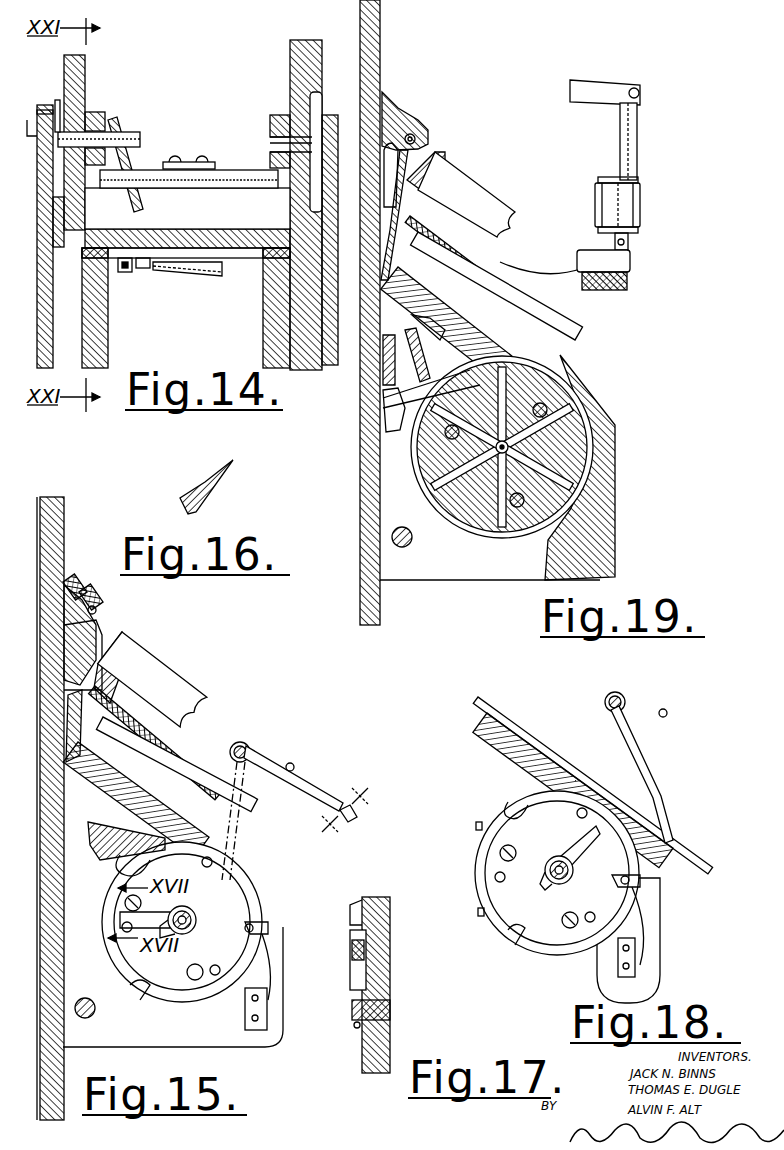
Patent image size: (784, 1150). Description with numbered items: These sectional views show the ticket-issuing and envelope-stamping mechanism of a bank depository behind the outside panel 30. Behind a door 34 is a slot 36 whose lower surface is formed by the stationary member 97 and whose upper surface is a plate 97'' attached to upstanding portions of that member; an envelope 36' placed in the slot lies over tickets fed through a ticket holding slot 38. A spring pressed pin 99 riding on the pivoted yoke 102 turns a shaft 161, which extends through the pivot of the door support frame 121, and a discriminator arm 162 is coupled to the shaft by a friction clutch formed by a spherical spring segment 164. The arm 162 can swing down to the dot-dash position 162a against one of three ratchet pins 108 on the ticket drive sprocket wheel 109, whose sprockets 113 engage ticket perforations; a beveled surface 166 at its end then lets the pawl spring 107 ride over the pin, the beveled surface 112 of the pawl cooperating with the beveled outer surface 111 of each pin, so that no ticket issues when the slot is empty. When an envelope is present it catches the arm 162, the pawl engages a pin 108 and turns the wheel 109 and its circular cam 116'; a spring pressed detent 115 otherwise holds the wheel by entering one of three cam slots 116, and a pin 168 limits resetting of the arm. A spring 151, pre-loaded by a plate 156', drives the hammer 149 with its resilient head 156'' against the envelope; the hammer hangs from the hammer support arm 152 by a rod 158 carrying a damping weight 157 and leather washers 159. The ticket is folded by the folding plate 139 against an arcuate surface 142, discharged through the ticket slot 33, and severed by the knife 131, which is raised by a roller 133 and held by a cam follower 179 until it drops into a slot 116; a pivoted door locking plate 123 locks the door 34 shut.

In FIG. 19, the outside panel 30 is at (360, 555).
In FIG. 15, the outside panel 30 is at (48, 498).
In FIG. 19, the ticket slot 33 is at (383, 402).
In FIG. 19, the door 34 is at (398, 250).
In FIG. 15, the door 34 is at (80, 725).
In FIG. 14, the slot 36 is at (186, 272).
In FIG. 19, the slot 36 is at (506, 278).
In FIG. 15, the slot 36 is at (176, 763).
In FIG. 18, the envelope 36' is at (612, 785).
In FIG. 19, the ticket holding slot 38 is at (520, 370).
In FIG. 15, the ticket holding slot 38 is at (245, 852).
In FIG. 18, the ticket holding slot 38 is at (635, 800).
In FIG. 14, the stationary member 97 is at (187, 205).
In FIG. 19, the stationary member 97 is at (447, 322).
In FIG. 15, the stationary member 97 is at (136, 799).
In FIG. 14, the plate 97'' is at (264, 205).
In FIG. 15, the plate 97'' is at (150, 680).
In FIG. 14, the spring pressed pin 99 is at (48, 112).
In FIG. 14, the pivoted yoke 102 is at (58, 100).
In FIG. 15, the pawl spring 107 is at (118, 920).
In FIG. 17, the pawl spring 107 is at (350, 975).
In FIG. 18, the pawl spring 107 is at (575, 840).
In FIG. 15, the ratchet pins 108 is at (213, 976).
In FIG. 17, the ratchet pins 108 is at (362, 1030).
In FIG. 18, the ratchet pins 108 is at (585, 808).
In FIG. 19, the ticket drive sprocket wheel 109 is at (478, 522).
In FIG. 15, the ticket drive sprocket wheel 109 is at (160, 990).
In FIG. 18, the ticket drive sprocket wheel 109 is at (478, 838).
In FIG. 17, the beveled outer surface 111 is at (352, 1018).
In FIG. 17, the beveled surface 112 is at (352, 935).
In FIG. 19, the sprockets 113 is at (430, 495).
In FIG. 18, the sprockets 113 is at (478, 824).
In FIG. 15, the spring pressed detent 115 is at (270, 928).
In FIG. 18, the spring pressed detent 115 is at (642, 900).
In FIG. 15, the cam slots 116 is at (155, 755).
In FIG. 18, the cam slots 116 is at (557, 857).
In FIG. 15, the circular cam 116' is at (182, 951).
In FIG. 18, the circular cam 116' is at (482, 936).
In FIG. 14, the door support frame 121 is at (88, 112).
In FIG. 15, the door locking plate 123 is at (108, 640).
In FIG. 14, the ticket severing knife 131 is at (213, 276).
In FIG. 15, the ticket severing knife 131 is at (100, 870).
In FIG. 14, the roller 133 is at (125, 272).
In FIG. 19, the ticket folding plate 139 is at (428, 498).
In FIG. 19, the arcuate surface 142 is at (382, 380).
In FIG. 19, the hammer 149 is at (630, 260).
In FIG. 19, the spring 151 is at (532, 262).
In FIG. 19, the hammer support arm 152 is at (600, 85).
In FIG. 14, the plate 156' is at (189, 159).
In FIG. 19, the plate 156' is at (463, 193).
In FIG. 19, the resilient head 156'' is at (630, 290).
In FIG. 19, the weight 157 is at (640, 205).
In FIG. 19, the rod 158 is at (637, 138).
In FIG. 19, the leather washers 159 is at (638, 180).
In FIG. 14, the shaft 161 is at (140, 140).
In FIG. 14, the discriminator arm 162 is at (140, 205).
In FIG. 16, the discriminator arm 162 is at (186, 492).
In FIG. 15, the discriminator arm 162 is at (268, 762).
In FIG. 18, the discriminator arm 162 is at (640, 765).
In FIG. 15, the discriminator arm lowered position 162a is at (232, 838).
In FIG. 14, the spherical spring segment 164 is at (108, 118).
In FIG. 16, the beveled surface 166 is at (222, 488).
In FIG. 15, the beveled surface 166 is at (352, 820).
In FIG. 18, the beveled surface 166 is at (665, 822).
In FIG. 15, the pin 168 is at (294, 767).
In FIG. 18, the pin 168 is at (667, 712).
In FIG. 14, the cam follower 179 is at (143, 268).
In FIG. 15, the cam follower 179 is at (190, 895).